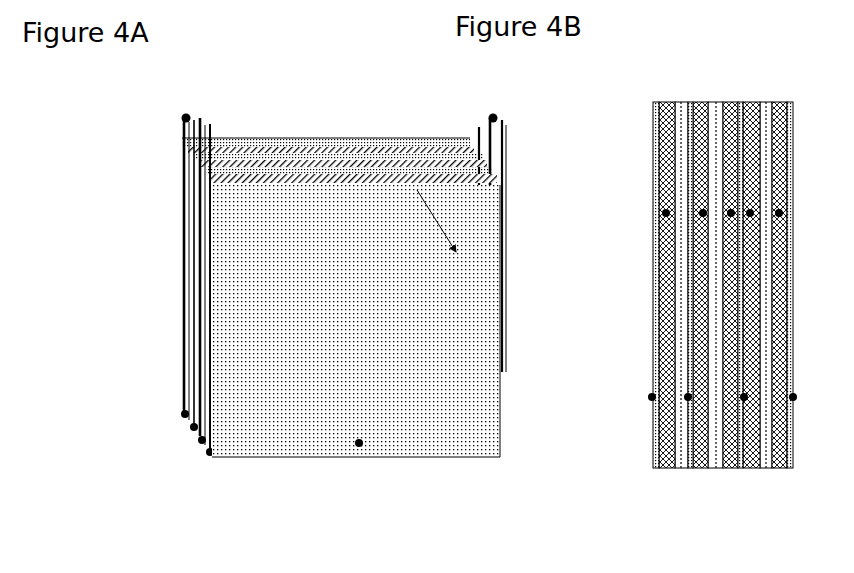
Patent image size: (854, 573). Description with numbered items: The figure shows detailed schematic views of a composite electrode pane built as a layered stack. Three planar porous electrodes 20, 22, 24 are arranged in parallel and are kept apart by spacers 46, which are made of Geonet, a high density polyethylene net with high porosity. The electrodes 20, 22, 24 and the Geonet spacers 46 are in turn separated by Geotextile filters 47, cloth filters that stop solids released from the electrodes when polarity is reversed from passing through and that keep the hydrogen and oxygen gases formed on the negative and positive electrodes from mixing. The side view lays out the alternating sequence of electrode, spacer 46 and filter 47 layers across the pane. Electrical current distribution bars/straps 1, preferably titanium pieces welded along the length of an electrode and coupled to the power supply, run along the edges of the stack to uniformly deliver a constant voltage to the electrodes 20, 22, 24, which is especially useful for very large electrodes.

In FIG. 4A, the electrical current distribution bars/straps 1 is at (493, 118).
In FIG. 4A, the electrode 20 is at (236, 152).
In FIG. 4B, the electrode 20 is at (680, 110).
In FIG. 4A, the electrode 22 is at (243, 163).
In FIG. 4B, the electrode 22 is at (716, 110).
In FIG. 4A, the electrode 24 is at (253, 176).
In FIG. 4B, the electrode 24 is at (766, 110).
In FIG. 4A, the spacers 46 is at (185, 414).
In FIG. 4B, the spacers 46 is at (779, 213).
In FIG. 4A, the Geotextile filters 47 is at (359, 443).
In FIG. 4B, the Geotextile filters 47 is at (793, 397).